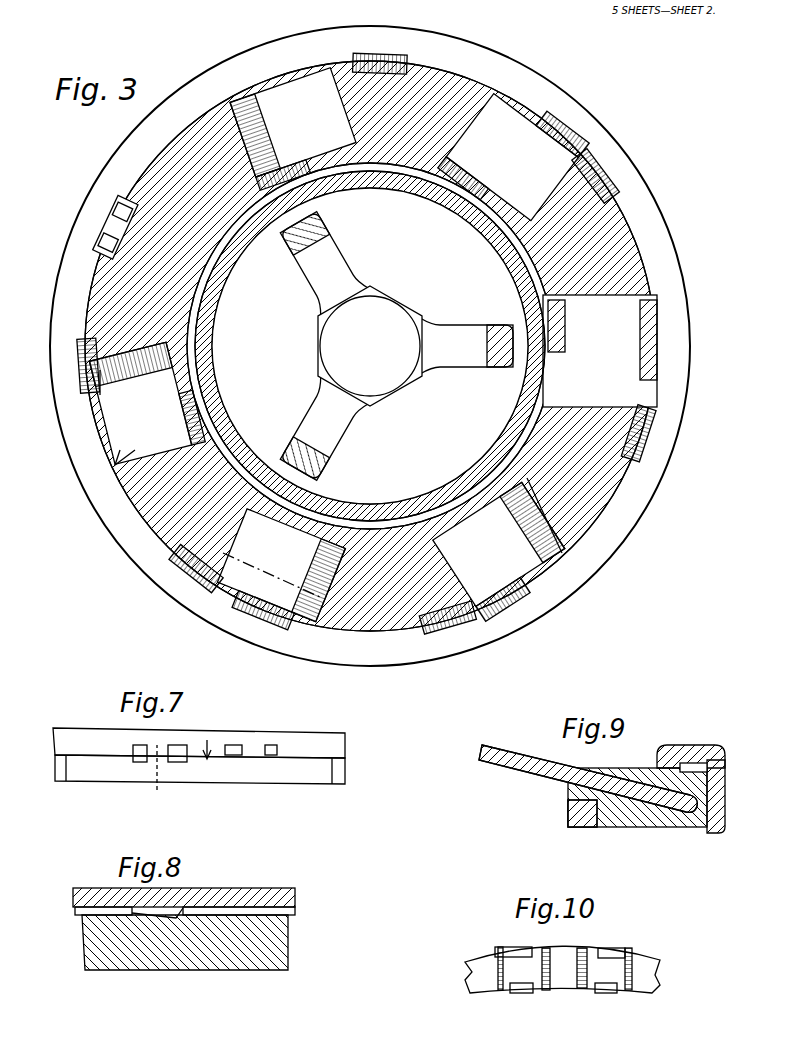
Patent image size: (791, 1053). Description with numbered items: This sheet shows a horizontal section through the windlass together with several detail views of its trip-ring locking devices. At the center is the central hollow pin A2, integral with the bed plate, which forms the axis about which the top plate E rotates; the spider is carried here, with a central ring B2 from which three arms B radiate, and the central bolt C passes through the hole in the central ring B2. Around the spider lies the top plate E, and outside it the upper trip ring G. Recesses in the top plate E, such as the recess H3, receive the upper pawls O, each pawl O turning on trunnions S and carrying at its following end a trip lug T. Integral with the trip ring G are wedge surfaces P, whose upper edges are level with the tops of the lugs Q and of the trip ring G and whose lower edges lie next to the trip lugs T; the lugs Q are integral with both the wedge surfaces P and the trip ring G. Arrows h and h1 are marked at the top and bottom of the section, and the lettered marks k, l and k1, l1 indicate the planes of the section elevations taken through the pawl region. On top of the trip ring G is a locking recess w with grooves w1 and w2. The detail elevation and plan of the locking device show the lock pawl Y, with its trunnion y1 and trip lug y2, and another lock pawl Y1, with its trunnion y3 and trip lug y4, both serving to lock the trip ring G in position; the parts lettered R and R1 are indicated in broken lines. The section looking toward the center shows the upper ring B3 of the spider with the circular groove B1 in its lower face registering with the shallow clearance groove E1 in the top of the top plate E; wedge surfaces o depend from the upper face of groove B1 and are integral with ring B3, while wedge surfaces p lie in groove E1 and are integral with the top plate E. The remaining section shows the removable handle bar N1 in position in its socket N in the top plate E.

In FIG. 3, the direction arrow of rotation h is at (155, 43).
In FIG. 3, the reverse direction arrow h1 is at (213, 634).
In FIG. 3, the upper trip ring G is at (657, 460).
In FIG. 7, the upper trip ring G is at (333, 774).
In FIG. 9, the upper trip ring G is at (580, 828).
In FIG. 10, the upper trip ring G is at (648, 980).
In FIG. 3, the top plate E is at (655, 270).
In FIG. 7, the top plate E is at (335, 741).
In FIG. 8, the top plate E is at (282, 956).
In FIG. 9, the top plate E is at (633, 828).
In FIG. 3, the lugs Q is at (405, 62).
In FIG. 3, the upper pawls O is at (339, 353).
In FIG. 3, the magnet winding space H3 is at (600, 351).
In FIG. 3, the wedge surfaces P is at (368, 56).
In FIG. 3, the central hollow pin A2 is at (376, 508).
In FIG. 3, the spider arms B is at (338, 257).
In FIG. 3, the central ring B2 is at (316, 344).
In FIG. 3, the central bolt C is at (395, 315).
In FIG. 3, the trunnions S is at (135, 452).
In FIG. 3, the trip lugs T is at (98, 378).
In FIG. 3, the section plane mark l is at (378, 614).
In FIG. 3, the section plane mark l1 is at (355, 630).
In FIG. 3, the section plane mark k is at (182, 540).
In FIG. 3, the section plane mark k1 is at (185, 560).
In FIG. 3, the locking recess w is at (104, 250).
In FIG. 7, the locking recess w is at (161, 778).
In FIG. 3, the groove w1 is at (95, 215).
In FIG. 7, the groove w1 is at (140, 764).
In FIG. 3, the groove w2 is at (82, 240).
In FIG. 7, the groove w2 is at (178, 764).
In FIG. 7, the slide R is at (150, 744).
In FIG. 7, the slide R1 is at (285, 748).
In FIG. 7, the lock pawl Y is at (160, 750).
In FIG. 10, the lock pawl Y is at (605, 988).
In FIG. 7, the lock pawl Y1 is at (253, 748).
In FIG. 10, the lock pawl Y1 is at (522, 988).
In FIG. 7, the trunnion y1 is at (185, 748).
In FIG. 10, the trunnion y1 is at (590, 950).
In FIG. 7, the trip lug y2 is at (137, 760).
In FIG. 10, the trip lug y2 is at (630, 950).
In FIG. 7, the trunnion y3 is at (235, 758).
In FIG. 10, the trunnion y3 is at (548, 948).
In FIG. 7, the trip lug y4 is at (272, 758).
In FIG. 10, the trip lug y4 is at (497, 948).
In FIG. 8, the upper ring B3 is at (270, 889).
In FIG. 9, the upper ring B3 is at (697, 745).
In FIG. 8, the circular groove B1 is at (75, 911).
In FIG. 9, the circular groove B1 is at (725, 765).
In FIG. 8, the wedge surfaces p is at (143, 916).
In FIG. 8, the wedge surfaces o is at (182, 906).
In FIG. 9, the clearance groove E1 is at (725, 788).
In FIG. 9, the socket N is at (585, 766).
In FIG. 9, the handle bar N1 is at (512, 773).